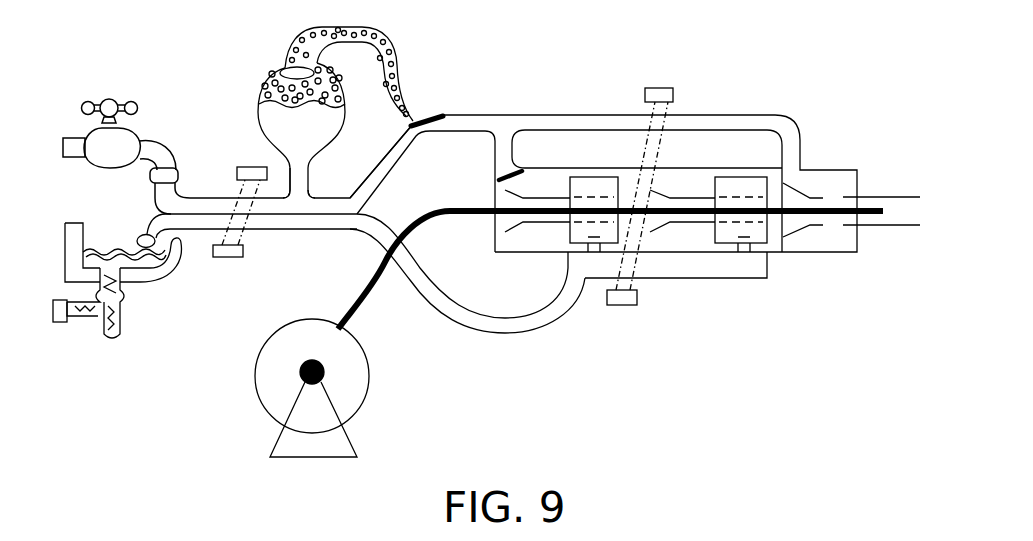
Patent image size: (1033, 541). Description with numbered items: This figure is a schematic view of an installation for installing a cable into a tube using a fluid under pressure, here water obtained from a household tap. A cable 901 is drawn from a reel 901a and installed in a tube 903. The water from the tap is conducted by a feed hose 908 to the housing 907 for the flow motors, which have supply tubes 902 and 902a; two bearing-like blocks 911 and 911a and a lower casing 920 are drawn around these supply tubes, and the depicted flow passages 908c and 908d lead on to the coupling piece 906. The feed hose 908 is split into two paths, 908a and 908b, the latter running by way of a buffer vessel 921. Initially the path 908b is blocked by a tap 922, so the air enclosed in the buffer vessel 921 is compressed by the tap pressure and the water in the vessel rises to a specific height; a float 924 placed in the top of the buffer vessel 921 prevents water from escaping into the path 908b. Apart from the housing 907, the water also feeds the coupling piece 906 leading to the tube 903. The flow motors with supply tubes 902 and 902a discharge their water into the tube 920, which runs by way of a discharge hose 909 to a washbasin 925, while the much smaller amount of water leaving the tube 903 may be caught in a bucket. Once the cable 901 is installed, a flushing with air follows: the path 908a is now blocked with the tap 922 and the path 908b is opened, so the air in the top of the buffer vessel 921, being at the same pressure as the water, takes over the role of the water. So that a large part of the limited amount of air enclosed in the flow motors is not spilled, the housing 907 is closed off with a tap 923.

The cable 901 is at (368, 300).
The reel 901a is at (347, 378).
The supply tube of flow motor 902 is at (548, 198).
The supply tube of flow motor 902a is at (693, 198).
The tube 903 is at (882, 197).
The coupling piece 906 is at (838, 170).
The housing 907 is at (522, 252).
The feed hose 908 is at (197, 205).
The path 908a is at (390, 168).
The path 908b is at (397, 48).
The passage 908c is at (493, 140).
The duct 908d is at (557, 113).
The discharge hose 909 is at (198, 223).
The bearing 911 is at (593, 177).
The second bearing 911a is at (740, 177).
The tube 920 is at (703, 278).
The buffer vessel 921 is at (270, 90).
The tap 922 is at (432, 113).
The tap 923 is at (505, 170).
The float 924 is at (290, 72).
The washbasin 925 is at (160, 270).